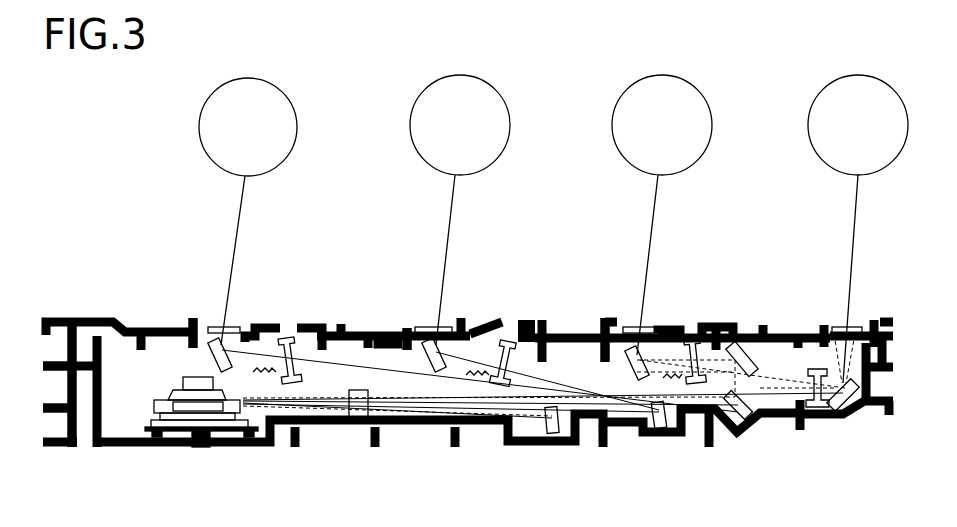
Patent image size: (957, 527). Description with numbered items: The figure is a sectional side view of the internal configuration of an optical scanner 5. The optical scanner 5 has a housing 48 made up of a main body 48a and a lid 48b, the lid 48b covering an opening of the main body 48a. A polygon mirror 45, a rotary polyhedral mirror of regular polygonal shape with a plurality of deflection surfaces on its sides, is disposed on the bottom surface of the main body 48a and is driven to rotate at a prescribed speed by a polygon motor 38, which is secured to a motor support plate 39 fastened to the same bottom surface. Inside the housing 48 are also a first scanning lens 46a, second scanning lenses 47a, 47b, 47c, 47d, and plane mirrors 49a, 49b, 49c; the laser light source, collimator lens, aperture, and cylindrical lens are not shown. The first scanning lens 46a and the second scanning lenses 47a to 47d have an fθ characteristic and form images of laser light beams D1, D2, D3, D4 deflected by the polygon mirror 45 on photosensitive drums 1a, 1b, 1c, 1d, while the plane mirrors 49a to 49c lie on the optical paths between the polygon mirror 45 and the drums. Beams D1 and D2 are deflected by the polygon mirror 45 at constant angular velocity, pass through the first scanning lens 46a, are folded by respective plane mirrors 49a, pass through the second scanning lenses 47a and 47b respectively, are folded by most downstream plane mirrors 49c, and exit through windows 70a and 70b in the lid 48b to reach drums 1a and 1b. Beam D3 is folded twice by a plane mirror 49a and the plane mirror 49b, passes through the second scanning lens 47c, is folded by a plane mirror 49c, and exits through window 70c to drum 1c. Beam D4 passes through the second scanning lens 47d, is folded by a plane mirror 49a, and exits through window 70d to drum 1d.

The optical scanner 5 is at (150, 233).
The housing 48 is at (93, 235).
The main body 48a is at (63, 395).
The lid 48b is at (80, 318).
The plane mirror 49c is at (185, 335).
The window 70a is at (213, 323).
The window 70b is at (427, 323).
The window 70c is at (627, 323).
The window 70d is at (860, 330).
The second scanning lens 47a is at (290, 337).
The second scanning lens 47b is at (500, 337).
The second scanning lens 47c is at (697, 340).
The second scanning lens 47d is at (820, 368).
The plane mirror 49a is at (557, 433).
The plane mirror 49b is at (741, 350).
The first scanning lens 46a is at (360, 420).
The polygon mirror 45 is at (233, 443).
The polygon motor 38 is at (200, 448).
The motor support plate 39 is at (173, 430).
The photosensitive drum 1a is at (248, 211).
The photosensitive drum 1b is at (460, 210).
The photosensitive drum 1c is at (662, 215).
The photosensitive drum 1d is at (858, 229).
The laser light beam D1 is at (233, 237).
The laser light beam D2 is at (443, 227).
The laser light beam D3 is at (645, 235).
The laser light beam D4 is at (853, 240).